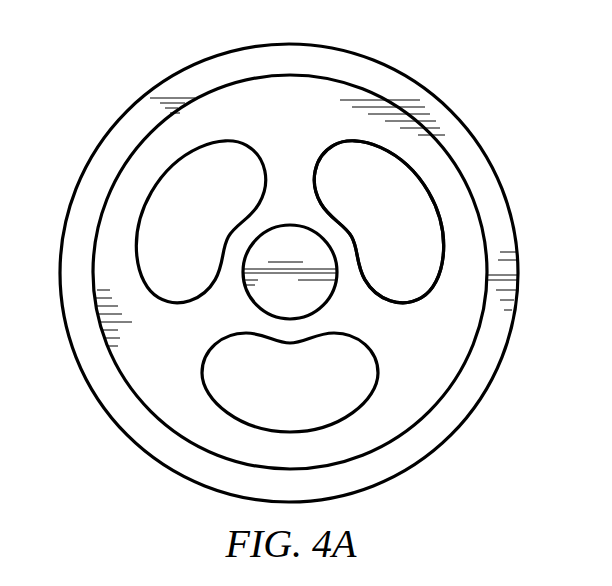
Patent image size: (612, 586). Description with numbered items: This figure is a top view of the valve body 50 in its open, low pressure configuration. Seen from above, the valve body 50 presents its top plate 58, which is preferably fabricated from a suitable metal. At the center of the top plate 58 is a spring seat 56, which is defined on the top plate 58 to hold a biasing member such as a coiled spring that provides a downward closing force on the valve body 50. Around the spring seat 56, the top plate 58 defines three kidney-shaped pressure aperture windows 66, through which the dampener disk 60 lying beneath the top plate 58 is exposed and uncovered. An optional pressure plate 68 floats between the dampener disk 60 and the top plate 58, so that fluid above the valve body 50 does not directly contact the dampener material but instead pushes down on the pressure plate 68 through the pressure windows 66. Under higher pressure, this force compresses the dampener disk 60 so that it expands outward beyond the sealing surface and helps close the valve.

The valve body 50 is at (431, 42).
The spring seat 56 is at (232, 303).
The top plate 58 is at (140, 142).
The dampener disk 60 is at (442, 443).
The pressure aperture windows 66 is at (138, 218).
The pressure plate 68 is at (410, 290).